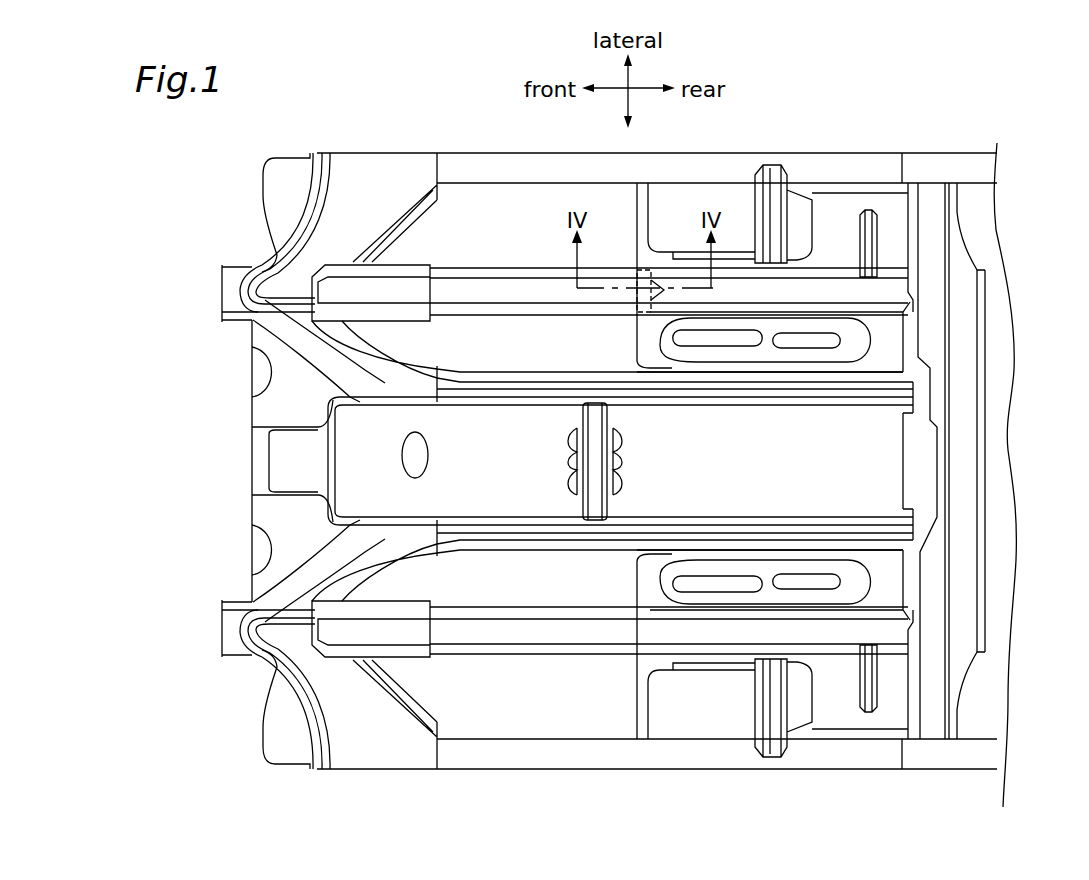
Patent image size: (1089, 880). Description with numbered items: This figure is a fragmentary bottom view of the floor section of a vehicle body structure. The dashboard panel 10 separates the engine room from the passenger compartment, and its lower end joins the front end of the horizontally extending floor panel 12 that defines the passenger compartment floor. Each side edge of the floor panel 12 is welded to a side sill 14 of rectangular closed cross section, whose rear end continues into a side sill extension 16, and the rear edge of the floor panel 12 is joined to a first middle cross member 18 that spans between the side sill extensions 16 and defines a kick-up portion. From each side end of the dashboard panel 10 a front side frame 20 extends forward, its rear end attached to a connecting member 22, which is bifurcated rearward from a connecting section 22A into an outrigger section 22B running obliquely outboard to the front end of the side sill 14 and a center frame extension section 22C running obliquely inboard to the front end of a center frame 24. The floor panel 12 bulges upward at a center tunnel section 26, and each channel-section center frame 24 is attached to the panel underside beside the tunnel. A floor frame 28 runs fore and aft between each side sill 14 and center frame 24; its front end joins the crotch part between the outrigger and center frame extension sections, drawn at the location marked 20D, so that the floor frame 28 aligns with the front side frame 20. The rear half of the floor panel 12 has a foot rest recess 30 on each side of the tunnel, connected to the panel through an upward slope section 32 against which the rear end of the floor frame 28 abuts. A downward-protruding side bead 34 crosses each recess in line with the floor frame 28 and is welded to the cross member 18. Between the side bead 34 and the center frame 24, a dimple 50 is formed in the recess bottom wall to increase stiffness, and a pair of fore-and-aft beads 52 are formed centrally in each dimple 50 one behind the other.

The dashboard panel 10 is at (268, 510).
The floor panel 12 is at (525, 717).
The side sill 14 is at (467, 793).
The side sill extension 16 is at (941, 757).
The first middle cross member 18 is at (962, 305).
The front side frame 20 is at (226, 632).
The connecting member 22 is at (287, 644).
The connecting section 22A is at (257, 636).
The outrigger section 22B is at (372, 787).
The center frame extension section 22C is at (343, 554).
The lower flange of rear cross member 20D is at (293, 619).
The center frame 24 is at (540, 530).
The center tunnel section 26 is at (471, 477).
The floor frame 28 is at (487, 633).
The foot rest recess 30 is at (901, 611).
The upward slope section 32 is at (647, 664).
The side bead 34 is at (830, 633).
The dimple 50 is at (765, 575).
The bead 52 is at (808, 580).